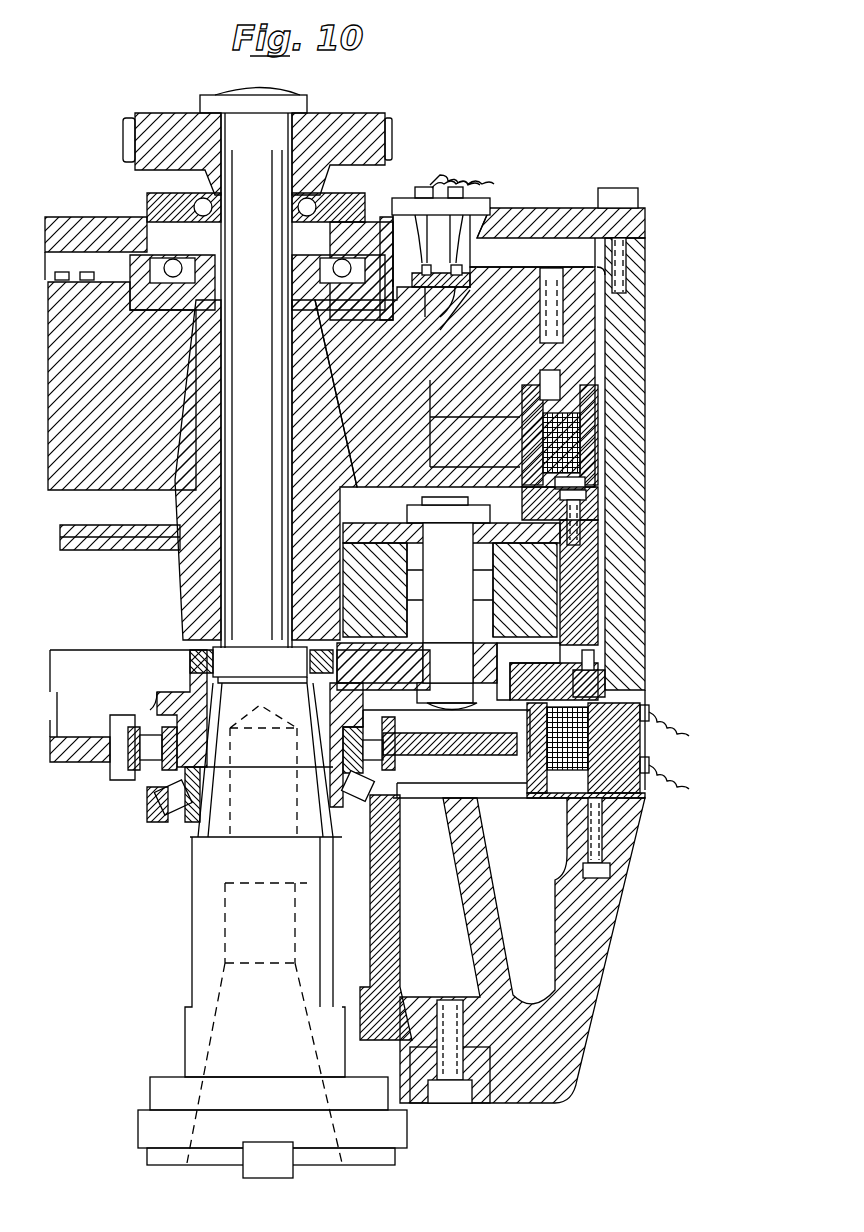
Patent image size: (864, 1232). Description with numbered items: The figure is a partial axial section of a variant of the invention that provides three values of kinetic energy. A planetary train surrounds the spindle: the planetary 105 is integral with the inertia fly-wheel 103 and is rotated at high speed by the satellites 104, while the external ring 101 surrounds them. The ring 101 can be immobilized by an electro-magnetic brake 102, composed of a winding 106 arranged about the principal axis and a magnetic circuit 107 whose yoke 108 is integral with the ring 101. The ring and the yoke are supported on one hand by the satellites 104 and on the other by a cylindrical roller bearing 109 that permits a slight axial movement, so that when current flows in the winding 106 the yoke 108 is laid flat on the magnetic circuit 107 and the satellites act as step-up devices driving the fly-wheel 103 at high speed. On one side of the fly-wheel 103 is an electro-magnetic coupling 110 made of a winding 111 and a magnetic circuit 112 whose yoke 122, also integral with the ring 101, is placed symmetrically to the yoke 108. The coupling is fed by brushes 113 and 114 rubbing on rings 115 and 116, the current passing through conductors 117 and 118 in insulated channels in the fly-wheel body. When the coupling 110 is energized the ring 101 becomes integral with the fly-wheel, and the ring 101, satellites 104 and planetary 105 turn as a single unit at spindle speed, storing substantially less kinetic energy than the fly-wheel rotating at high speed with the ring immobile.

The external ring 101 is at (590, 572).
The electro-magnetic brake 102 is at (580, 697).
The fly-wheel 103 is at (525, 322).
The satellites 104 is at (538, 598).
The planetary 105 is at (195, 568).
The winding 106 is at (580, 740).
The magnetic circuit 107 is at (547, 793).
The yoke 108 is at (540, 670).
The cylindrical roller bearing 109 is at (390, 750).
The electro-magnetic coupling 110 is at (560, 480).
The winding 111 is at (572, 440).
The magnetic circuit 112 is at (587, 395).
The brush 113 is at (425, 262).
The brush 114 is at (445, 188).
The ring 115 is at (393, 245).
The ring 116 is at (477, 238).
The conductor 117 is at (445, 300).
The conductor 118 is at (470, 300).
The yoke 122 is at (588, 507).